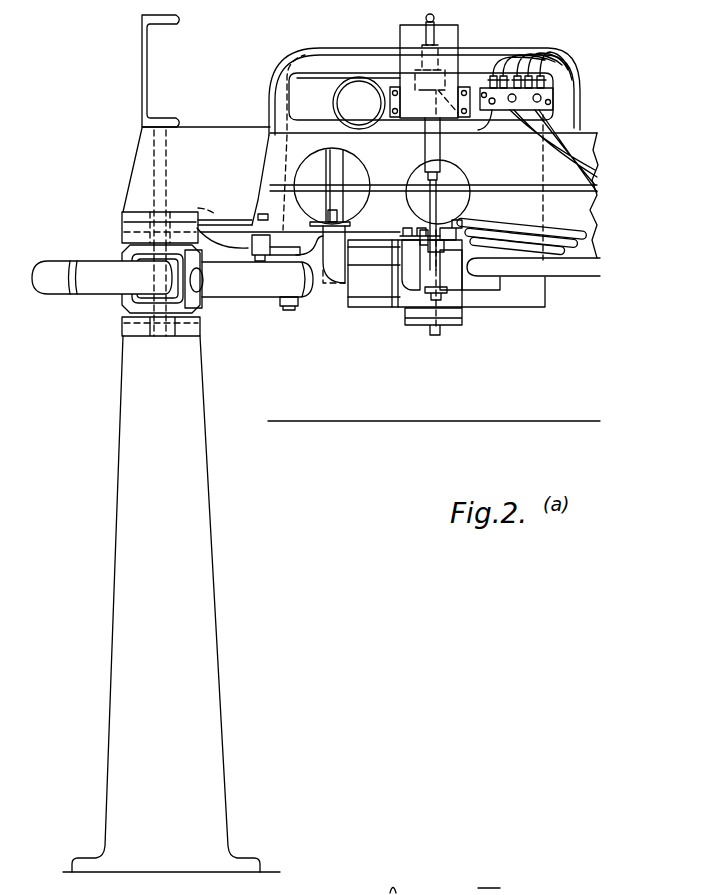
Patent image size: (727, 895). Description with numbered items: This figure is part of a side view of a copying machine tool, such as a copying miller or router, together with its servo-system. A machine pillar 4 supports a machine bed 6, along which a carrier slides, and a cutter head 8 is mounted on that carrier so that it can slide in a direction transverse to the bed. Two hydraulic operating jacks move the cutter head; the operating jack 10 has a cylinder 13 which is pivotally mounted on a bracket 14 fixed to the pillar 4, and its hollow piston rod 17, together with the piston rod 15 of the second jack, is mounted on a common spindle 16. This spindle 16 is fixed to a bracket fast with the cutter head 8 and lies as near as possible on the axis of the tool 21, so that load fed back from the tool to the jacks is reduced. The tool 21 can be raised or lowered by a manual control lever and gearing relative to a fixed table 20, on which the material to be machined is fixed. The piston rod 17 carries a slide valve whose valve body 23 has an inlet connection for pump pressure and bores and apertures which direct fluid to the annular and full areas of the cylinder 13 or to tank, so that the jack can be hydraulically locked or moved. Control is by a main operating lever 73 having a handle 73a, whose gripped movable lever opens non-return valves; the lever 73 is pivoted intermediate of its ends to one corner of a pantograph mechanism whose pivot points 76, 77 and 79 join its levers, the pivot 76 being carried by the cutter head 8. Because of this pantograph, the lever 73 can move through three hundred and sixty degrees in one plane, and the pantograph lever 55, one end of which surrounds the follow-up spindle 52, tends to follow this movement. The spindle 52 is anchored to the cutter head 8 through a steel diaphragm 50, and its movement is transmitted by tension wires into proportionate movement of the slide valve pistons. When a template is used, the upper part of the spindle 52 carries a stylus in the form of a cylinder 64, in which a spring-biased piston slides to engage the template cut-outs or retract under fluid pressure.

The machine pillar 4 is at (130, 493).
The machine bed 6 is at (124, 324).
The cutter head 8 is at (522, 158).
The operating jack 10 is at (106, 290).
The cylinder 13 is at (258, 290).
The bracket 14 is at (132, 214).
The piston rod 15 is at (533, 288).
The common spindle 16 is at (470, 289).
The piston rod 17 is at (377, 278).
The fixed table 20 is at (490, 421).
The tool 21 is at (432, 340).
The valve body 23 is at (404, 290).
The steel diaphragm 50 is at (483, 135).
The follow-up spindle 52 is at (425, 160).
The lever 55 is at (445, 226).
The cylinder 64 is at (425, 52).
The main operating lever 73 is at (254, 249).
The handle 73a is at (288, 308).
The pivot point 76 is at (341, 254).
The pivot point 77 is at (262, 238).
The pivot point 79 is at (330, 220).